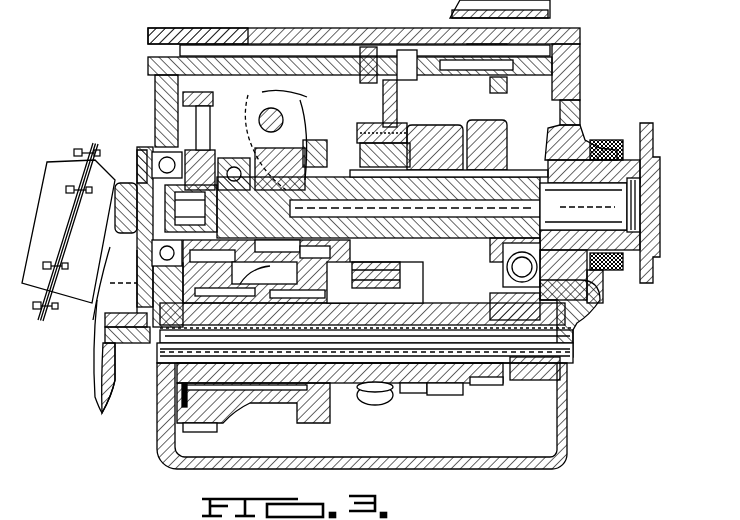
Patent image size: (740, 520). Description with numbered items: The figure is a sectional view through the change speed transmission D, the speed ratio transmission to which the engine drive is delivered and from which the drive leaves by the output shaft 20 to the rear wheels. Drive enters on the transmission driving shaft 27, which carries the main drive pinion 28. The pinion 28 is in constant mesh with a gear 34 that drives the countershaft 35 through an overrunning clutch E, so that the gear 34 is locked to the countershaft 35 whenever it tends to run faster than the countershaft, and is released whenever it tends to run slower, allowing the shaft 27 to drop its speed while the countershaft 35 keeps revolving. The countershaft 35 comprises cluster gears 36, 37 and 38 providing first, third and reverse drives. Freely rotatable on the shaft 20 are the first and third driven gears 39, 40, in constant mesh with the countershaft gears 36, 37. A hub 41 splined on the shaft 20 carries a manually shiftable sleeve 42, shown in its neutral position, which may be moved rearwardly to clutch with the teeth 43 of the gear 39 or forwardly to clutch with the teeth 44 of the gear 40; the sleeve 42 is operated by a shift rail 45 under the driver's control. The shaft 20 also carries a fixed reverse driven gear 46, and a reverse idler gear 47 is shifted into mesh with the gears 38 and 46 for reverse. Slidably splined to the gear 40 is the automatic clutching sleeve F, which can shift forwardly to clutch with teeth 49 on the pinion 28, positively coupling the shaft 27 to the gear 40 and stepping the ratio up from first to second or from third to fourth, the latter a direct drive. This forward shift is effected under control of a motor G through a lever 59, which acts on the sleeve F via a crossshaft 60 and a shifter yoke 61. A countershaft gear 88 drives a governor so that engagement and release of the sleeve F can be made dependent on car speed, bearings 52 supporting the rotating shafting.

The output shaft 20 is at (653, 200).
The transmission driving shaft 27 is at (132, 170).
The main drive pinion 28 is at (187, 151).
The gear 34 is at (205, 429).
The countershaft 35 is at (407, 383).
The countershaft gear 36 is at (453, 395).
The countershaft gear 37 is at (356, 409).
The countershaft gear 38 is at (502, 385).
The first driven gear 39 is at (464, 123).
The third driven gear 40 is at (314, 138).
The hub 41 is at (378, 207).
The manually shiftable sleeve 42 is at (384, 126).
The teeth 43 is at (416, 138).
The teeth 44 is at (360, 140).
The shift rail 45 is at (335, 56).
The reverse driven gear 46 is at (510, 144).
The reverse idler gear 47 is at (510, 305).
The teeth 49 is at (232, 159).
The ball bearing 52 is at (175, 168).
The lever 59 is at (346, 294).
The crossshaft 60 is at (257, 44).
The shifter yoke 61 is at (286, 118).
The countershaft gear 88 is at (370, 300).
The speed ratio transmission D is at (301, 46).
The overrunning clutch E is at (250, 398).
The automatic clutching sleeve F is at (248, 110).
The motor G is at (56, 173).